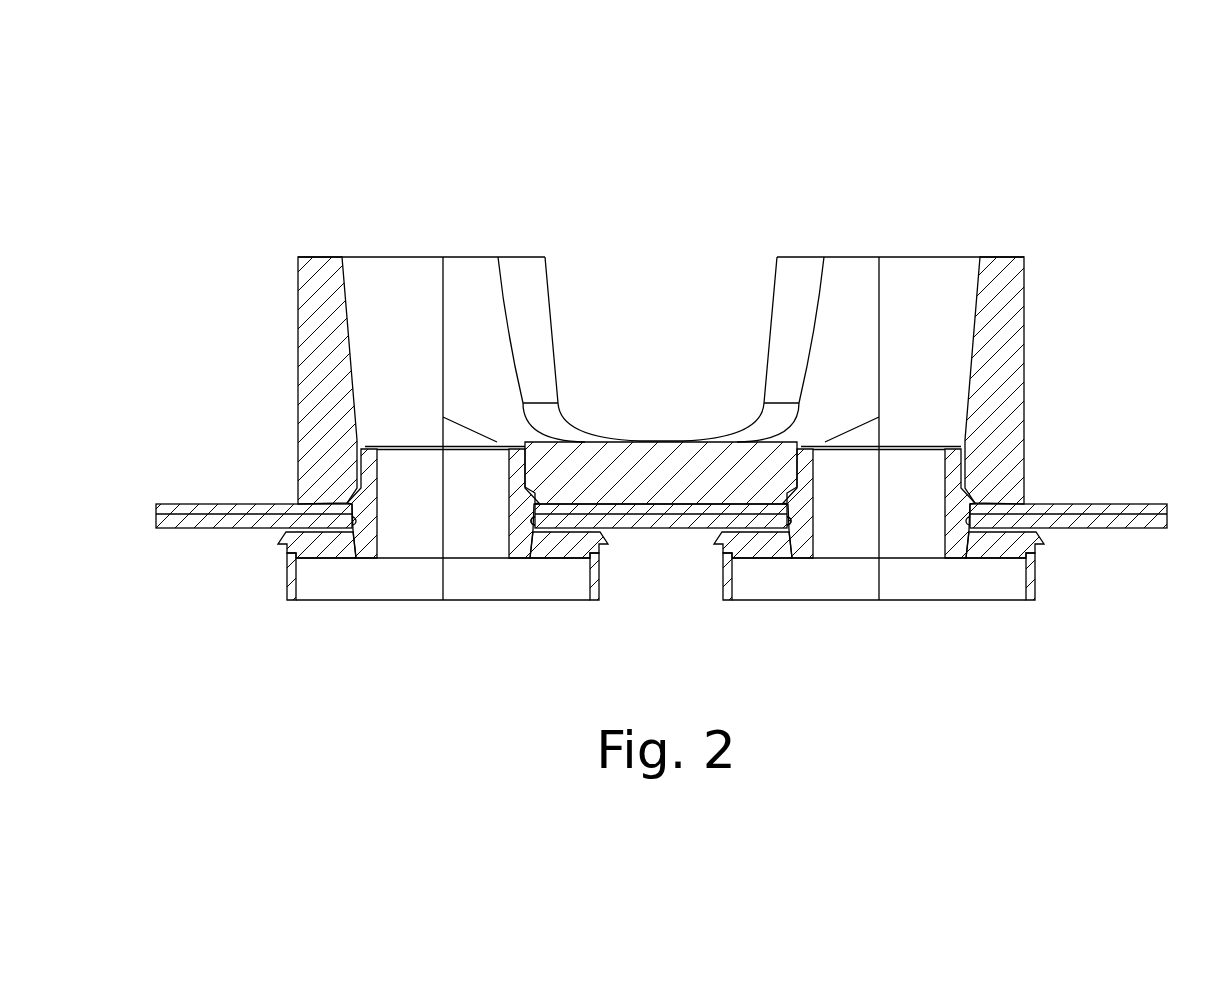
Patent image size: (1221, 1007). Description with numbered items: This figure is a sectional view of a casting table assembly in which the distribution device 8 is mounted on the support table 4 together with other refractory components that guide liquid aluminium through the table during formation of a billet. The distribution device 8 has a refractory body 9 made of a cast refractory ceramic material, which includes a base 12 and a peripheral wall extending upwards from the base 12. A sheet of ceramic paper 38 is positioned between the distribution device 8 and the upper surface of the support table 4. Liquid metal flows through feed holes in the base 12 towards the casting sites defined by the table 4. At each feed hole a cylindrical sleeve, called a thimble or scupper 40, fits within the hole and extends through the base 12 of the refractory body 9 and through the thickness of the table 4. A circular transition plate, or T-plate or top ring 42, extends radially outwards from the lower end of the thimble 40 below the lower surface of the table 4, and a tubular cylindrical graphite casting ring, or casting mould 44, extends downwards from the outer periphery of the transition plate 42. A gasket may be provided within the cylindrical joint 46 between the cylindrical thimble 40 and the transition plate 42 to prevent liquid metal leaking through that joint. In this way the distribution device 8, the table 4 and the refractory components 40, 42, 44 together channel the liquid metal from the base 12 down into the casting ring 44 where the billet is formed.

The support table 4 is at (212, 523).
The distribution device 8 is at (1026, 195).
The refractory body 9 is at (1023, 323).
The base 12 is at (635, 450).
The sheet of ceramic paper 38 is at (192, 508).
The cylindrical sleeve (thimble) 40 is at (372, 550).
The transition plate 42 is at (323, 557).
The graphite casting ring 44 is at (288, 592).
The cylindrical joint 46 is at (535, 537).